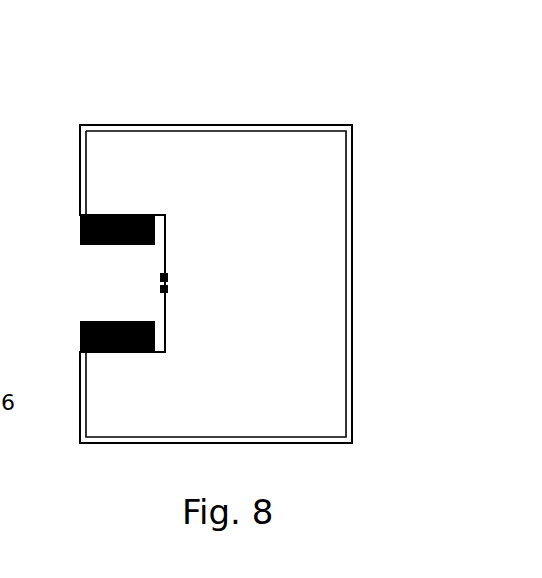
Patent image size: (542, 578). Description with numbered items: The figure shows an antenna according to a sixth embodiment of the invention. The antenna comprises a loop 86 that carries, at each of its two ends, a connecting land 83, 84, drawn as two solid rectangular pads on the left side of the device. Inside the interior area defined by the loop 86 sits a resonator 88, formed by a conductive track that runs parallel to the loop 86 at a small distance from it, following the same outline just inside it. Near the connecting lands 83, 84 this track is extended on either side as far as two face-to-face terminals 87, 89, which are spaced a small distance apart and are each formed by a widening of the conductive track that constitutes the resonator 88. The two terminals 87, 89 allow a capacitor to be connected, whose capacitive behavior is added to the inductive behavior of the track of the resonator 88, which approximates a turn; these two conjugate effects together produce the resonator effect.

The connecting land 83 is at (100, 321).
The connecting land 84 is at (112, 245).
The loop 86 is at (352, 203).
The terminal 87 is at (169, 290).
The resonator 88 is at (352, 415).
The terminal 89 is at (169, 276).